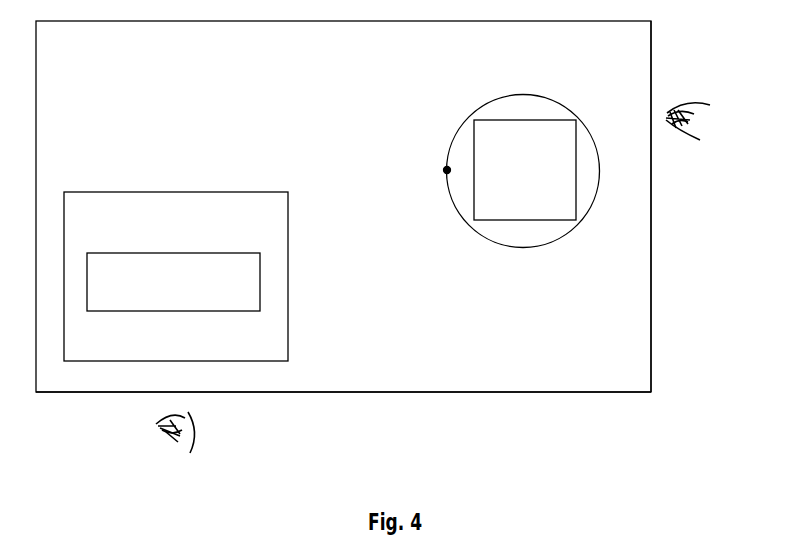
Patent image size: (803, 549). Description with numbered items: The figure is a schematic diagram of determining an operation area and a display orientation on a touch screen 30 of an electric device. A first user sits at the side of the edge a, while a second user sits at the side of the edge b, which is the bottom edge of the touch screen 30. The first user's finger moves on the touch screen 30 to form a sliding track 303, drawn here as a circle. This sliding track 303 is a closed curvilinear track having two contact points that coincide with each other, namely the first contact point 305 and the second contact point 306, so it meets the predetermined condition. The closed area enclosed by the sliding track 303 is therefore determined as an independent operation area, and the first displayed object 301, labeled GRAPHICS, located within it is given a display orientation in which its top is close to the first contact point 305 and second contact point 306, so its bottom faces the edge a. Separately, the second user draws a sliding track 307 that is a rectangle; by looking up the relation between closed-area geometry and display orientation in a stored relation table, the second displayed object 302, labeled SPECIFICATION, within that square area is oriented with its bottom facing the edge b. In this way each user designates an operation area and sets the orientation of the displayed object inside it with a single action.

The touch screen 30 is at (651, 205).
The edge a is at (651, 323).
The edge b is at (343, 392).
The first displayed object 301 is at (526, 119).
The second displayed object 302 is at (173, 253).
The sliding track 303 is at (524, 95).
The first contact point 305 is at (373, 121).
The second contact point 306 is at (447, 170).
The sliding track 307 is at (175, 192).